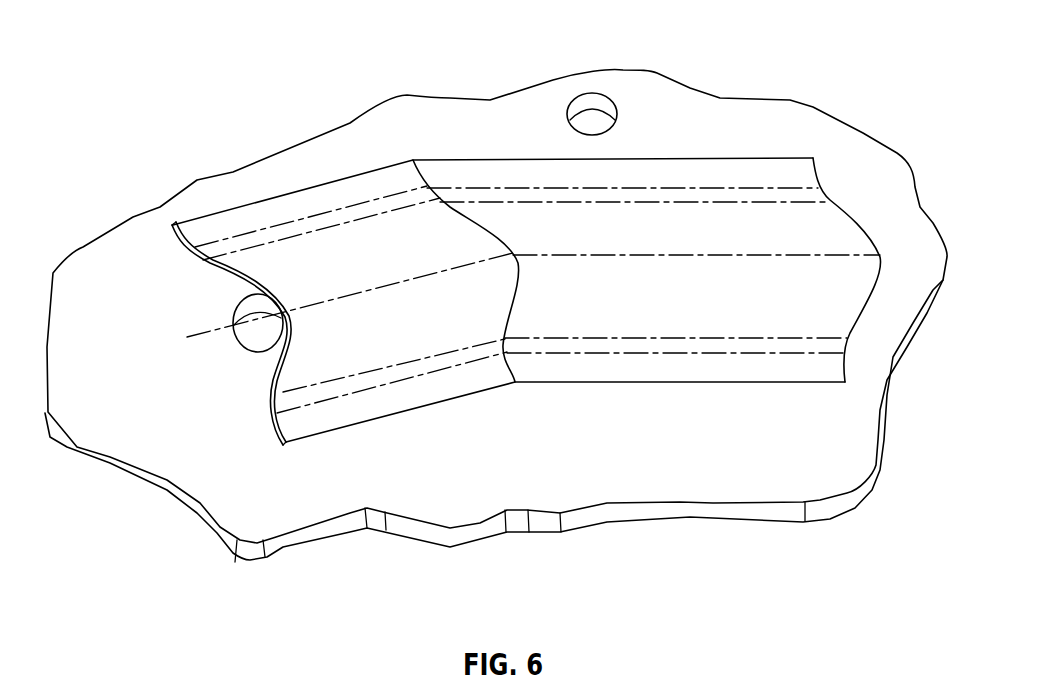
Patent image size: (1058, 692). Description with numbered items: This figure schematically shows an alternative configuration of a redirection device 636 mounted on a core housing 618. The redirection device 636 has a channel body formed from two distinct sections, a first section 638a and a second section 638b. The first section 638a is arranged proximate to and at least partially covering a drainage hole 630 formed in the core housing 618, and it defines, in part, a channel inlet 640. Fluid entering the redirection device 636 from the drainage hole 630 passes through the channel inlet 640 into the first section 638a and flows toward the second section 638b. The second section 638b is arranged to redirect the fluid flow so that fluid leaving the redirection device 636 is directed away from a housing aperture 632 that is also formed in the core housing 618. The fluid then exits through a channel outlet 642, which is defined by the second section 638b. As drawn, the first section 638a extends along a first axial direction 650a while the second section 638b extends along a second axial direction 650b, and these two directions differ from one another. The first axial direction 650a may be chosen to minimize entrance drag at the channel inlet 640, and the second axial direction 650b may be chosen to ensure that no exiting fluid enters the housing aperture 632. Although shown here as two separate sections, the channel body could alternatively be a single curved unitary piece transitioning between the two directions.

The core housing 618 is at (663, 488).
The drainage hole 630 is at (255, 345).
The housing aperture 632 is at (594, 93).
The redirection device 636 is at (500, 177).
The first section 638a is at (328, 207).
The second section 638b is at (727, 187).
The channel inlet 640 is at (185, 258).
The channel outlet 642 is at (830, 200).
The first axial direction 650a is at (370, 292).
The second axial direction 650b is at (682, 257).